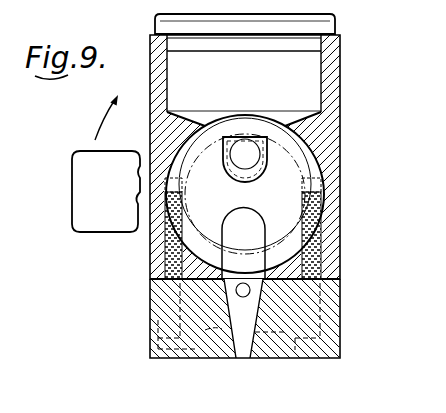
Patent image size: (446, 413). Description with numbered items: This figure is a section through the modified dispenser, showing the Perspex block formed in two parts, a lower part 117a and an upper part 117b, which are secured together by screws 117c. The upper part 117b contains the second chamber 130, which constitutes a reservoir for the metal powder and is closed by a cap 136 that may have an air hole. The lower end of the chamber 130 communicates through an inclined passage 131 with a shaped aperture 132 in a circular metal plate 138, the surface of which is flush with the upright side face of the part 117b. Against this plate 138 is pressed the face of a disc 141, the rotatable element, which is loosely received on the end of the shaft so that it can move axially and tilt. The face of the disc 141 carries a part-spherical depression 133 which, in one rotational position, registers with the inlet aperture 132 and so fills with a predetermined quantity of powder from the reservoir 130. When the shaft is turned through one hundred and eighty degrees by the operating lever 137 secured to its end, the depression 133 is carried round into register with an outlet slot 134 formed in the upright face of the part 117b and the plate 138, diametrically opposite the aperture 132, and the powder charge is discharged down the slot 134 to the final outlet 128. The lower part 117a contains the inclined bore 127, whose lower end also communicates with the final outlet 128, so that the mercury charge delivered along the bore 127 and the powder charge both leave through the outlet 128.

The block part 117a is at (333, 331).
The block part 117b is at (340, 279).
The screws 117c is at (160, 316).
The inclined bore 127 is at (243, 297).
The final outlet 128 is at (248, 318).
The second chamber 130 is at (295, 80).
The inclined passage 131 is at (266, 130).
The shaped aperture 132 is at (267, 162).
The part-spherical depression 133 is at (263, 166).
The outlet slot 134 is at (322, 262).
The cap 136 is at (320, 28).
The operating lever 137 is at (115, 216).
The circular metal plate 138 is at (257, 125).
The disc 141 is at (338, 188).